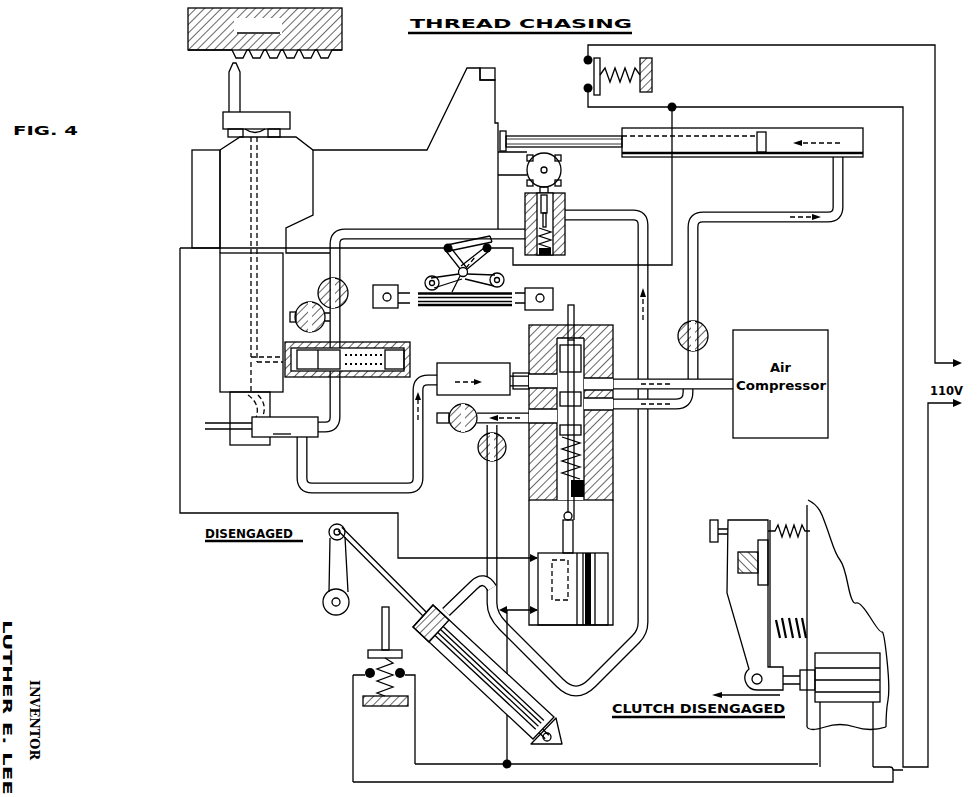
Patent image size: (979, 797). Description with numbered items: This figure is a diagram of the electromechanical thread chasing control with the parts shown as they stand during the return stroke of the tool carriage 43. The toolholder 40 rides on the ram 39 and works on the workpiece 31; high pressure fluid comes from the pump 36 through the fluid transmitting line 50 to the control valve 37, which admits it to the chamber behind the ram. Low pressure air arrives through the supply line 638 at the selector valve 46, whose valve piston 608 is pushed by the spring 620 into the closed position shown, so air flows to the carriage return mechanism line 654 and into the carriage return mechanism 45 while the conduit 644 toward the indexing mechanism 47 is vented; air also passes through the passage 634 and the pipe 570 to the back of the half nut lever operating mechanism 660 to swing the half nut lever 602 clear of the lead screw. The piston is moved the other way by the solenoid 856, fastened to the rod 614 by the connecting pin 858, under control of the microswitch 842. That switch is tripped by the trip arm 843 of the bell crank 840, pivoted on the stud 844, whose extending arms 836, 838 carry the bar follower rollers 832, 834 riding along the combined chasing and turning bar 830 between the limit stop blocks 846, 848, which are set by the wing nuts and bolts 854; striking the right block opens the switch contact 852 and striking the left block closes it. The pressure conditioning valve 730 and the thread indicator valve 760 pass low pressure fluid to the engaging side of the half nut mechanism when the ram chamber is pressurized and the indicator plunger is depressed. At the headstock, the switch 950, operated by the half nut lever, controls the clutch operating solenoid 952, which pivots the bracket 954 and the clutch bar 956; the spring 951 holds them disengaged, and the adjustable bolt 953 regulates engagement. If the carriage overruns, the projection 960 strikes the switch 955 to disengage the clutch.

The workpiece 31 is at (327, 55).
The pump 36 is at (198, 427).
The control valve 37 is at (285, 427).
The ram 39 is at (270, 133).
The toolholder 40 is at (298, 118).
The tool carriage 43 is at (420, 180).
The carriage return mechanism 45 is at (782, 128).
The selector valve 46 is at (605, 410).
The indexing mechanism 47 is at (470, 362).
The fluid transmitting line 50 is at (226, 432).
The pipe 570 is at (363, 487).
The half nut lever 602 is at (328, 572).
The valve piston 608 is at (584, 437).
The rod 614 is at (570, 536).
The spring 620 is at (584, 462).
The passage 634 is at (530, 414).
The supply line 638 is at (713, 389).
The conduit 644 is at (522, 374).
The carriage return mechanism line 654 is at (698, 362).
The half nut lever operating mechanism 660 is at (453, 672).
The pressure conditioning valve 730 is at (348, 342).
The thread indicator valve 760 is at (568, 202).
The combined chasing and turning bar 830 is at (469, 280).
The bar follower roller 832 is at (426, 284).
The bar follower roller 834 is at (504, 280).
The extending arm 836 is at (446, 306).
The extending arm 838 is at (488, 306).
The bell crank 840 is at (470, 290).
The microswitch 842 is at (452, 244).
The trip arm 843 is at (472, 240).
The stud 844 is at (457, 270).
The limit stop block 846 is at (388, 310).
The limit stop block 848 is at (553, 300).
The switch contact 852 is at (490, 243).
The wing nuts and bolts 854 is at (380, 297).
The solenoid 856 is at (553, 612).
The connecting pin 858 is at (575, 515).
The switch 950 is at (358, 670).
The spring 951 is at (793, 622).
The clutch operating solenoid 952 is at (840, 653).
The adjustable bolt 953 is at (792, 528).
The bracket 954 is at (740, 623).
The switch 955 is at (592, 73).
The clutch bar 956 is at (738, 563).
The projection 960 is at (489, 74).